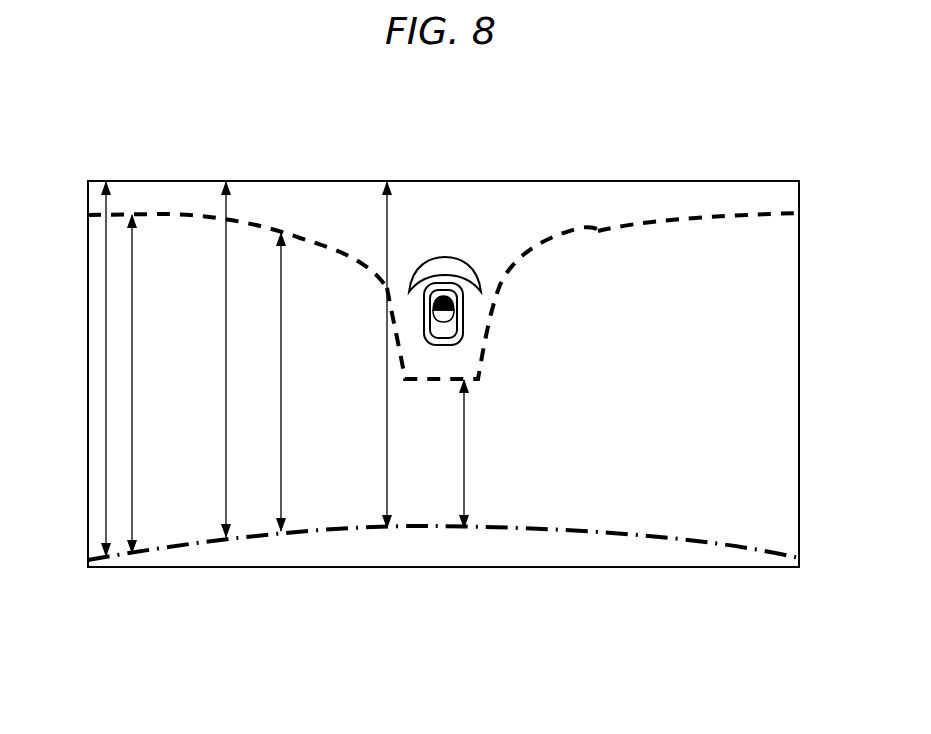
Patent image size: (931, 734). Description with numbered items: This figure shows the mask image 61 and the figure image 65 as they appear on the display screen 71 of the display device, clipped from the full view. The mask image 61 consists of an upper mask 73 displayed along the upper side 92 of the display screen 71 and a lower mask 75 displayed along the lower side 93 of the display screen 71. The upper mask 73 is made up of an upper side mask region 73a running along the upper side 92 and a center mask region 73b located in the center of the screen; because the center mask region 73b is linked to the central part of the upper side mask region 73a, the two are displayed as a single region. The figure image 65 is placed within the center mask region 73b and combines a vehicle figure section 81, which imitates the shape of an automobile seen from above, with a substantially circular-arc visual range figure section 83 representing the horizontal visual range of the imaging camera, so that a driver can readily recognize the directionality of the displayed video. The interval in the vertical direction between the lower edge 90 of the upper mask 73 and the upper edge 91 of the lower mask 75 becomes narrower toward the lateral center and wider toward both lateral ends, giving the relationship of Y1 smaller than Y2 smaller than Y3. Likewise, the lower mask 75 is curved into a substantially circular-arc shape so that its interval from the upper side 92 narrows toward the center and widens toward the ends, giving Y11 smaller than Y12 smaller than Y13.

The display screen 71 is at (166, 590).
The upper side 92 is at (680, 181).
The lower side 93 is at (393, 568).
The upper mask 73 is at (443, 258).
The upper side mask region 73a is at (160, 195).
The center mask region 73b is at (478, 313).
The lower edge of the upper mask 90 is at (678, 222).
The upper edge of the lower mask 91 is at (627, 528).
The visual range figure section 83 is at (425, 273).
The vehicle figure section 81 is at (446, 330).
The figure image 65 is at (448, 235).
The mask image 61 is at (542, 212).
The lower mask 75 is at (553, 556).
The interval between lower mask and upper side at lateral end Y13 is at (104, 415).
The interval between upper mask lower edge and lower mask upper edge at lateral end Y3 is at (133, 413).
The intermediate interval between lower mask and upper side Y12 is at (225, 447).
The intermediate interval between upper mask and lower mask Y2 is at (282, 437).
The interval between lower mask and upper side at center Y11 is at (386, 388).
The interval between upper mask and lower mask at center Y1 is at (465, 450).